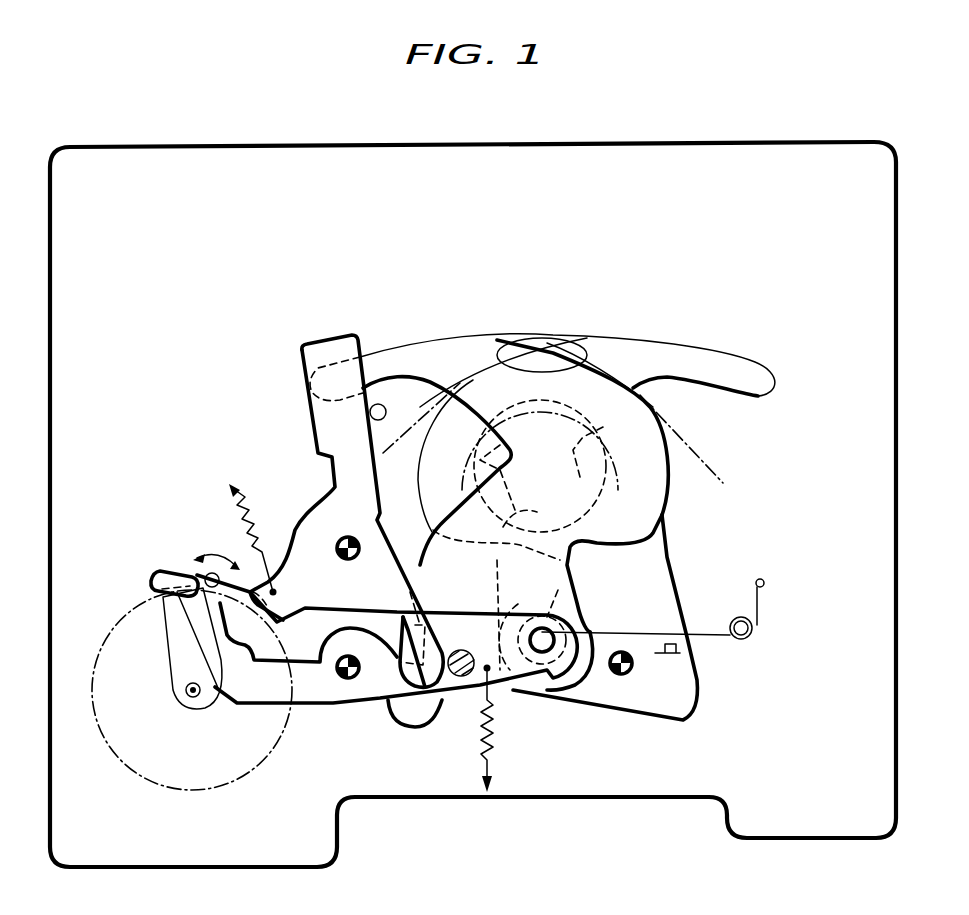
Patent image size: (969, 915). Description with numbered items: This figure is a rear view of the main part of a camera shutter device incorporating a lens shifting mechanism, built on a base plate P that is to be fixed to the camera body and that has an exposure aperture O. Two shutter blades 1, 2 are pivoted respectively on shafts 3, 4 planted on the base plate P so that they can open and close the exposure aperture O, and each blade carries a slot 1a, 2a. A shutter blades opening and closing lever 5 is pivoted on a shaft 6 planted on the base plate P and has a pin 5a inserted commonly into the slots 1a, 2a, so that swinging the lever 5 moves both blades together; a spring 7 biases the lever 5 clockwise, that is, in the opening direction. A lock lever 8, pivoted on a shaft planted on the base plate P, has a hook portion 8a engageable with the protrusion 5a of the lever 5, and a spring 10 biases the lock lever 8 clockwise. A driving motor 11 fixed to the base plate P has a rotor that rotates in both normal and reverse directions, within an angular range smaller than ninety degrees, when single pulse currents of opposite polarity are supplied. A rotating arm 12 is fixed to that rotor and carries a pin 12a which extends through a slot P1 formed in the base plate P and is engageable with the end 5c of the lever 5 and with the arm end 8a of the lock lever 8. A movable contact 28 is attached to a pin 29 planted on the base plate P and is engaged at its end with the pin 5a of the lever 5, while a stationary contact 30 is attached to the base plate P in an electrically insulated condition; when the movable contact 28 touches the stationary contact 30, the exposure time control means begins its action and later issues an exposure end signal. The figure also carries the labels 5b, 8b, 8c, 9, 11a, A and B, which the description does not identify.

The base plate P is at (210, 162).
The shutter blade 1 is at (445, 337).
The slot 1a is at (520, 690).
The shutter blade 2 is at (583, 335).
The slot 2a is at (639, 506).
The shaft 3 is at (462, 680).
The shaft 4 is at (620, 678).
The shutter blades opening and closing lever 5 is at (296, 706).
The pin 5a is at (550, 685).
The lever portion 5b is at (392, 690).
The end of the shutter blades opening and closing lever 5c is at (160, 570).
The shaft 6 is at (347, 680).
The spring 7 is at (497, 777).
The lock lever 8 is at (325, 485).
The hook portion 8a is at (420, 700).
The hook 8b is at (263, 635).
The lever end 8c is at (300, 360).
The pivot pin 9 is at (346, 546).
The spring 10 is at (232, 489).
The driving motor 11 is at (115, 765).
The wheel axis 11a is at (188, 694).
The rotating arm 12 is at (173, 672).
The pin 12a is at (205, 577).
The movable contact 28 is at (712, 640).
The pin 29 is at (753, 628).
The stationary contact 30 is at (672, 655).
The slot P1 is at (304, 644).
The exposure aperture O is at (545, 557).
The direction A is at (210, 548).
The direction B is at (237, 553).